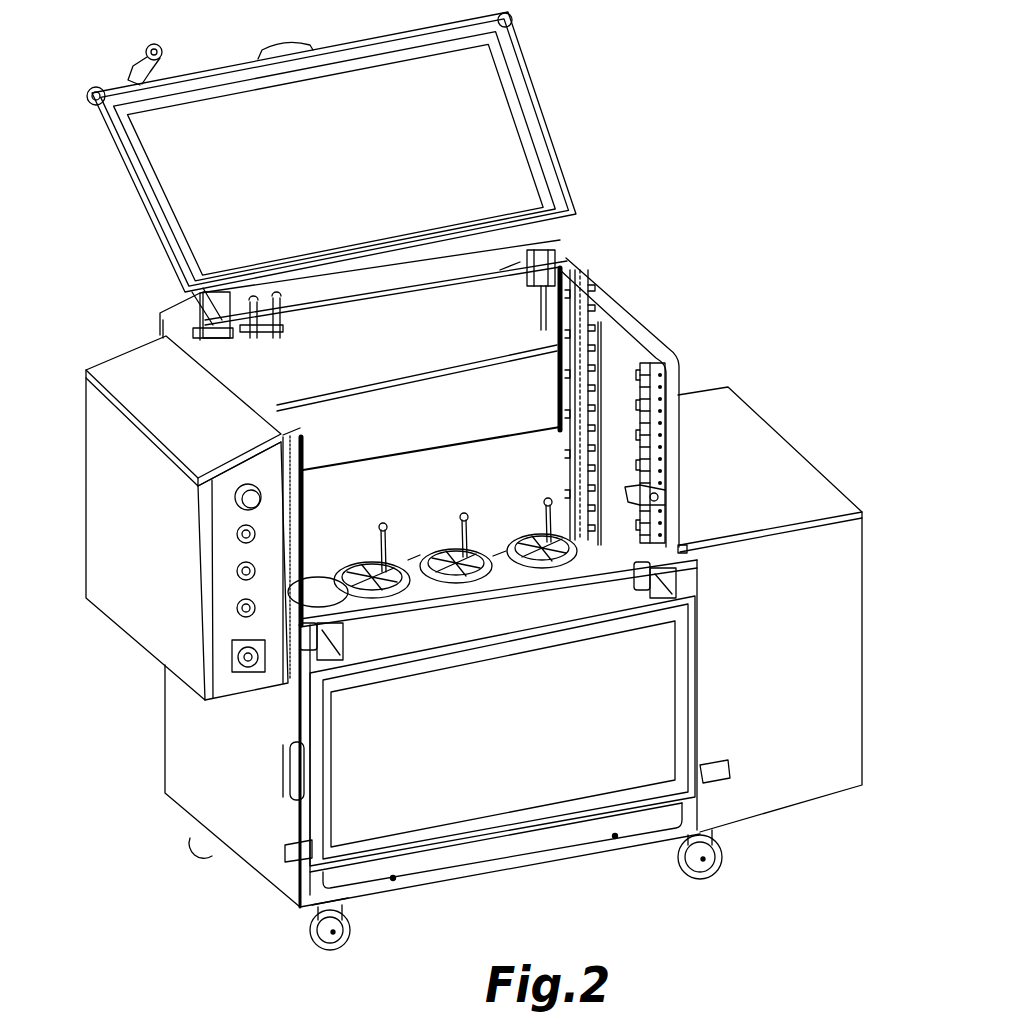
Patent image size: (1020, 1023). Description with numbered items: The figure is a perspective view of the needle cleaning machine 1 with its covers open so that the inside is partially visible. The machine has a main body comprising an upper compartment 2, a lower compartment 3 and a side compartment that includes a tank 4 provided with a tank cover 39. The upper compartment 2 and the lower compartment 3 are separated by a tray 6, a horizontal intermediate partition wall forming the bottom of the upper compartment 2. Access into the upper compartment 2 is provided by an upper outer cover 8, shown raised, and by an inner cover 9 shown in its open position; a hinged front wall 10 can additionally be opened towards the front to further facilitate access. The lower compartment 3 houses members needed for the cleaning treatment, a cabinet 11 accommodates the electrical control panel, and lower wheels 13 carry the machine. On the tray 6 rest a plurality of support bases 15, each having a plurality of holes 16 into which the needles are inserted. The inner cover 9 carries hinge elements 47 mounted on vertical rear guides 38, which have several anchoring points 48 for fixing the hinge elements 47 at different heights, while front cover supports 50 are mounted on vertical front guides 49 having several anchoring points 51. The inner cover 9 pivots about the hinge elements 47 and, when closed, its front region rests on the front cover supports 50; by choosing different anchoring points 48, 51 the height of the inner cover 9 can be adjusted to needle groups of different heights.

The needle cleaning machine 1 is at (715, 153).
The upper compartment 2 is at (449, 322).
The lower compartment 3 is at (213, 773).
The tank 4 is at (847, 668).
The tray 6 is at (487, 541).
The upper outer cover 8 is at (473, 113).
The inner cover 9 is at (498, 315).
The hinged front wall 10 is at (507, 797).
The cabinet 11 is at (115, 485).
The lower wheels 13 is at (307, 933).
The support bases 15 is at (355, 552).
The holes 16 is at (393, 550).
The vertical rear guides 38 is at (590, 345).
The tank cover 39 is at (800, 493).
The hinge elements 47 is at (664, 358).
The anchoring points 48 is at (583, 330).
The vertical front guides 49 is at (660, 440).
The front cover supports 50 is at (660, 477).
The anchoring points 51 is at (660, 393).